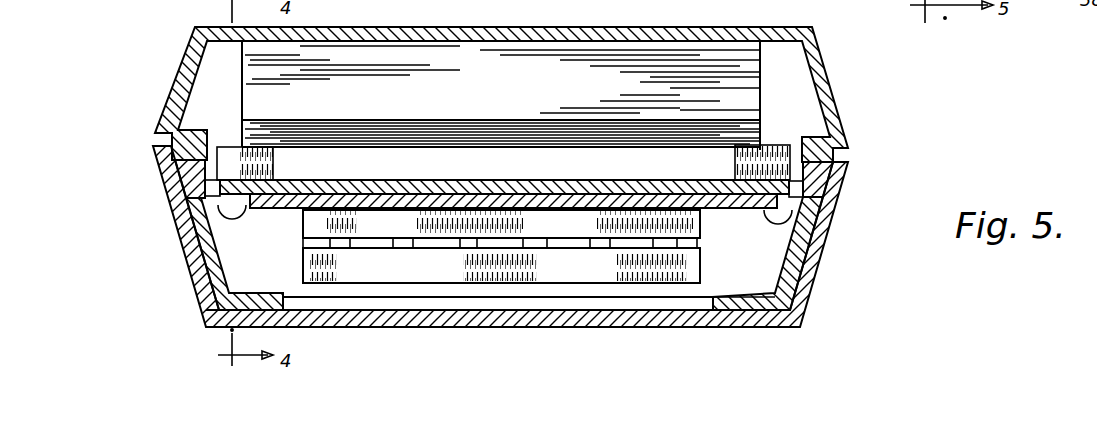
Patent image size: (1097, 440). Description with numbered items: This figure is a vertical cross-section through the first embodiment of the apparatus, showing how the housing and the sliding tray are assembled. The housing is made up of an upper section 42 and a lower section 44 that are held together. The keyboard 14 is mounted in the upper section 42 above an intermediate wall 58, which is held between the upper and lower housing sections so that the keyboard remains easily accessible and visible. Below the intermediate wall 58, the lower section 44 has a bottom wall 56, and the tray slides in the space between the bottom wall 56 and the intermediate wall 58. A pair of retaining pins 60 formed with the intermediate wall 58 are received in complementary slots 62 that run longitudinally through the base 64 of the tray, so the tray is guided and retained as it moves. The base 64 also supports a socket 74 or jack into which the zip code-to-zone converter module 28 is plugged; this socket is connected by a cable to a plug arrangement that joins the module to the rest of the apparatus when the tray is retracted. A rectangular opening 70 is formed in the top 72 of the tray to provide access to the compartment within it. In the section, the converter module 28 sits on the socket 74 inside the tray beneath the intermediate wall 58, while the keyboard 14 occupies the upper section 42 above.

The keyboard 14 is at (551, 96).
The zip code-to-zone converter module 28 is at (586, 273).
The upper section 42 is at (394, 27).
The lower section 44 is at (803, 310).
The bottom wall 56 is at (438, 324).
The intermediate wall 58 is at (390, 186).
The retaining pins 60 is at (827, 236).
The slots 62 is at (803, 211).
The base 64 is at (628, 200).
The rectangular opening 70 is at (717, 303).
The top 72 is at (733, 297).
The socket 74 is at (581, 233).